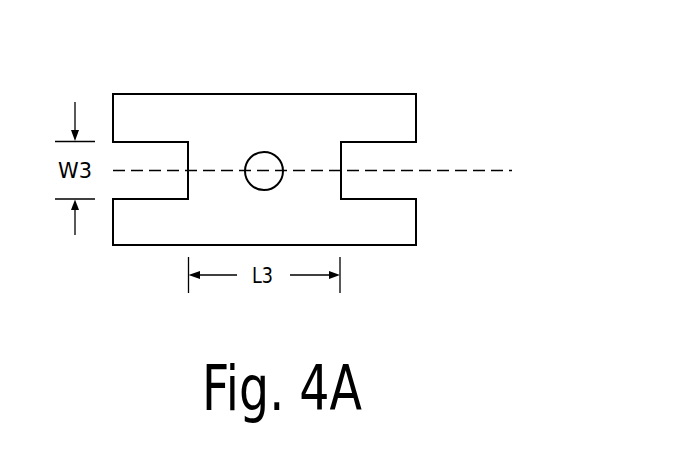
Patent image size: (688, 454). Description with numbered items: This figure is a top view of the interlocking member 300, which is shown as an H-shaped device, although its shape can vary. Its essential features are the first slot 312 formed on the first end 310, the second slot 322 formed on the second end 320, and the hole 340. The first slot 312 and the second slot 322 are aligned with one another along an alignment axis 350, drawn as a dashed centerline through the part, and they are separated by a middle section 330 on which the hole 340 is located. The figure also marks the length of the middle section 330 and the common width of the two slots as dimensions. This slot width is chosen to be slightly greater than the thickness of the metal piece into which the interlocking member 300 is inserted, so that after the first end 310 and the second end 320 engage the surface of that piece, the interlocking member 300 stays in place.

The interlocking member 300 is at (496, 79).
The first end 310 is at (133, 94).
The first slot 312 is at (118, 183).
The second end 320 is at (398, 95).
The second slot 322 is at (387, 163).
The middle section 330 is at (237, 152).
The hole 340 is at (264, 162).
The alignment axis 350 is at (470, 172).